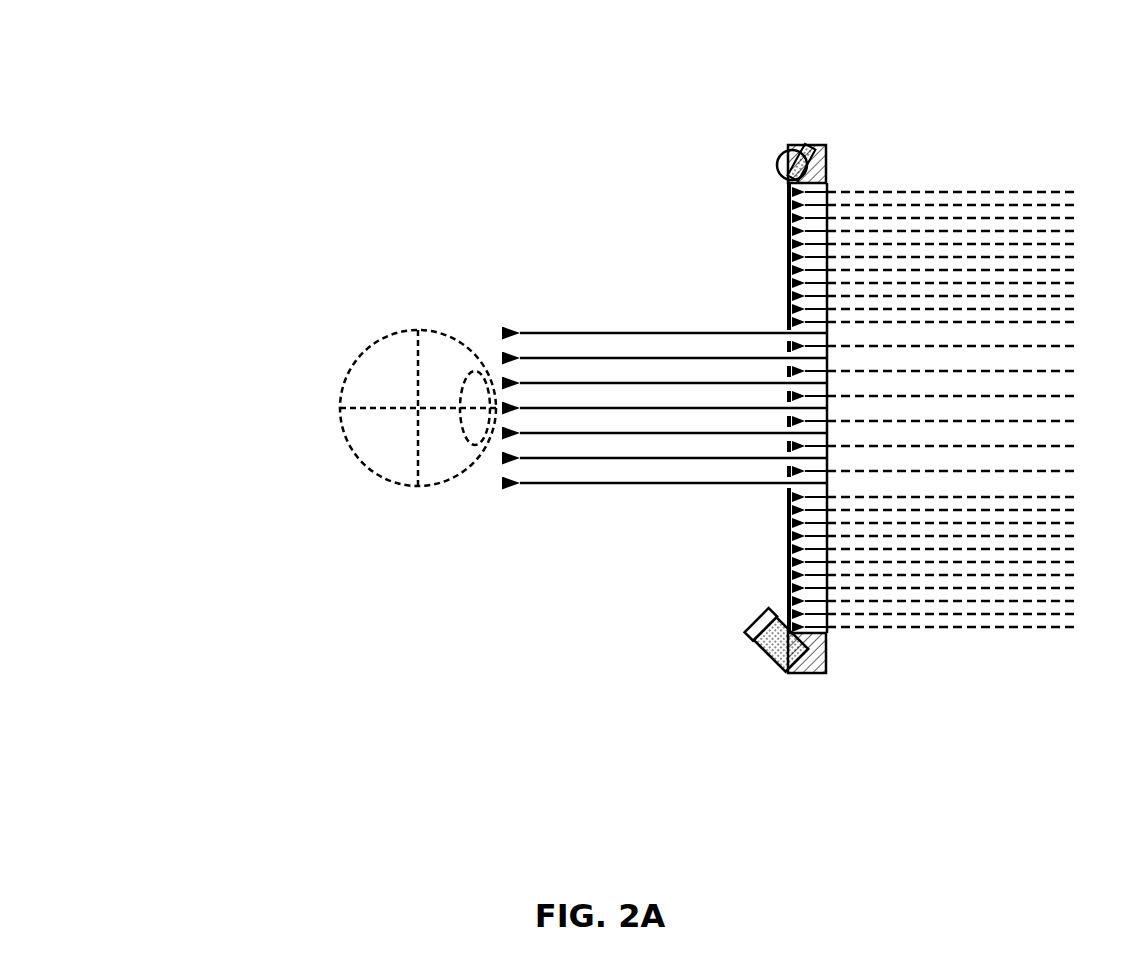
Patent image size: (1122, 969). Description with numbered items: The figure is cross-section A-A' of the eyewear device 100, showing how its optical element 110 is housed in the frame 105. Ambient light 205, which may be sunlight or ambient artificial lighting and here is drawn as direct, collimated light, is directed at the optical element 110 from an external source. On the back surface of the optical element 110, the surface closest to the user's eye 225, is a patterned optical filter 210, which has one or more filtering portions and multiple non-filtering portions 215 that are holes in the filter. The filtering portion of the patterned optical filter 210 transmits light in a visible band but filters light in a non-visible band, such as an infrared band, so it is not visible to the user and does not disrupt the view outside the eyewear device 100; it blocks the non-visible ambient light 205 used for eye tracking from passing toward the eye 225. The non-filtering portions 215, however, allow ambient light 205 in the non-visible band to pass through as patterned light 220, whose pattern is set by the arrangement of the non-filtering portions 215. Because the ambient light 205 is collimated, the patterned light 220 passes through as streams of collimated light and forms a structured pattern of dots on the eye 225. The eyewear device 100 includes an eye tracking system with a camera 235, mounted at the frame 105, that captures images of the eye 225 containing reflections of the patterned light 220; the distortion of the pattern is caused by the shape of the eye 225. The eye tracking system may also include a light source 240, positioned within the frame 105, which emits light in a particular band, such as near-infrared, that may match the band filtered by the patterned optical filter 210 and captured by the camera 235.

The eyewear device 100 is at (555, 410).
The frame 105 is at (768, 748).
The optical element 110 is at (817, 212).
The ambient light 205 is at (825, 688).
The patterned optical filter 210 is at (787, 242).
The non-filtering portions 215 is at (783, 329).
The patterned light 220 is at (507, 503).
The eye 225 is at (372, 344).
The camera 235 is at (773, 667).
The light source 240 is at (777, 162).